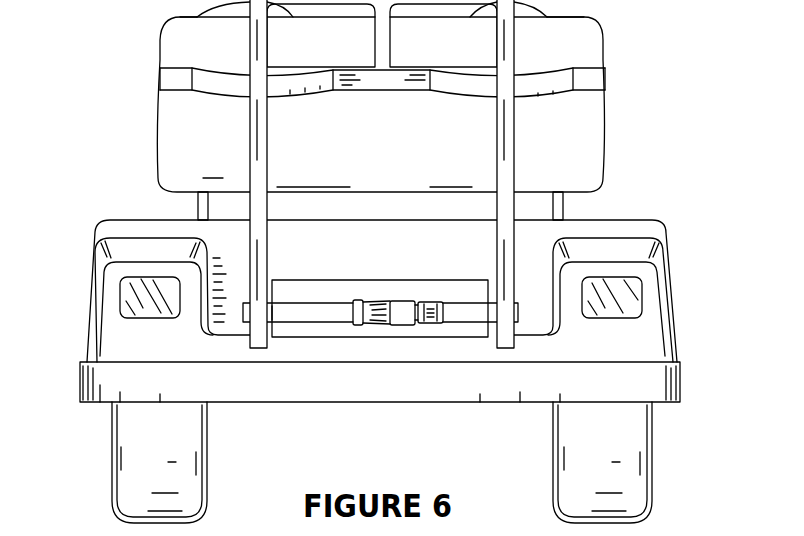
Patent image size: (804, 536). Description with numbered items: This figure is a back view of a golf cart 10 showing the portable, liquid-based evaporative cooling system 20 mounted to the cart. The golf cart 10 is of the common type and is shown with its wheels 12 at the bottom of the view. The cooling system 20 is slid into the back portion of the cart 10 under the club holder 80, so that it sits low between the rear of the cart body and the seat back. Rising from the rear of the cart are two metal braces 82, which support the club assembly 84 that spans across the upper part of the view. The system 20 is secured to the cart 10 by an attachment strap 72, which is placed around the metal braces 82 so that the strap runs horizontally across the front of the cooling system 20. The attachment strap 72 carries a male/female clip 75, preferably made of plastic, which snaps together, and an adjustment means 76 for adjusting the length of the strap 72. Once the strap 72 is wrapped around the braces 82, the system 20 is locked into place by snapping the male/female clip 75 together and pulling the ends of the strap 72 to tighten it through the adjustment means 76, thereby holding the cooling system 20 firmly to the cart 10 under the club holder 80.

The golf cart 10 is at (100, 168).
The wheels 12 is at (140, 475).
The evaporative cooling system 20 is at (460, 328).
The attachment strap 72 is at (313, 313).
The male/female clip 75 is at (371, 332).
The adjustment means 76 is at (431, 332).
The club holder 80 is at (451, 174).
The metal braces 82 is at (257, 152).
The club assembly 84 is at (537, 80).